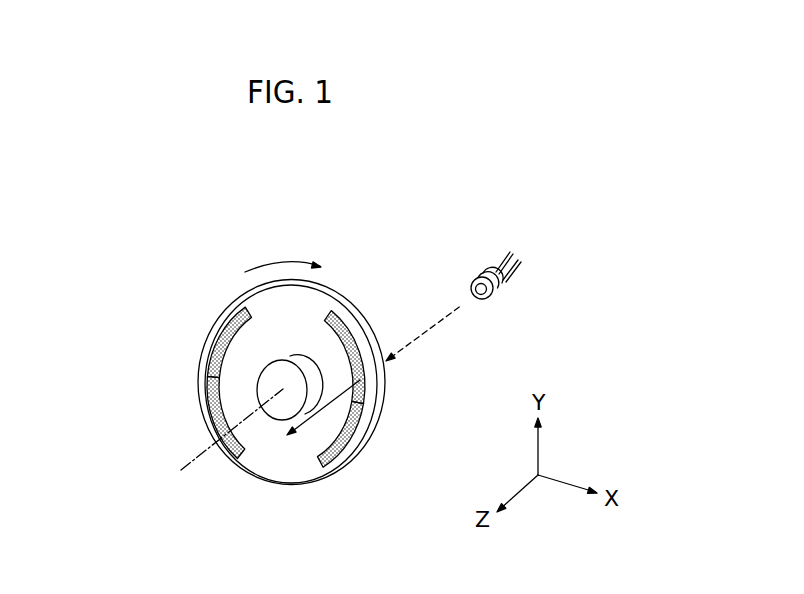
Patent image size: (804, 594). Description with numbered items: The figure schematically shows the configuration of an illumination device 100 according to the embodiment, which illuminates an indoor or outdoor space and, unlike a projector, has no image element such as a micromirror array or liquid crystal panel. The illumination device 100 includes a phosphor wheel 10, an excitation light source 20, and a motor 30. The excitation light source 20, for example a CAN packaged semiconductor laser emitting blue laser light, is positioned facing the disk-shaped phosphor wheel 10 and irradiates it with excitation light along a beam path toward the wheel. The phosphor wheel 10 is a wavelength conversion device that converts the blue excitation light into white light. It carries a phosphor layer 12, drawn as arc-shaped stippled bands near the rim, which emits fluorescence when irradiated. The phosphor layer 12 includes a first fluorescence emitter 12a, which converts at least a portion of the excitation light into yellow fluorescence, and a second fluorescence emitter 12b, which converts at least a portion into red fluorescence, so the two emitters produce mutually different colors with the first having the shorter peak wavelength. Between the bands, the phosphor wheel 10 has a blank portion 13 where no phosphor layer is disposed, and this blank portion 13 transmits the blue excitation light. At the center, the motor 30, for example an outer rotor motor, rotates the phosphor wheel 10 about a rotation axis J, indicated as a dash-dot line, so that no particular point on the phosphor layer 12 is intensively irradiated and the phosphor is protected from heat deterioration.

The illumination device 100 is at (494, 217).
The phosphor wheel 10 is at (208, 293).
The phosphor layer 12 is at (350, 387).
The first fluorescence emitter 12a is at (357, 385).
The second fluorescence emitter 12b is at (364, 434).
The blank portion 13 is at (300, 466).
The excitation light source 20 is at (493, 291).
The motor 30 is at (262, 383).
The rotation axis J is at (198, 462).